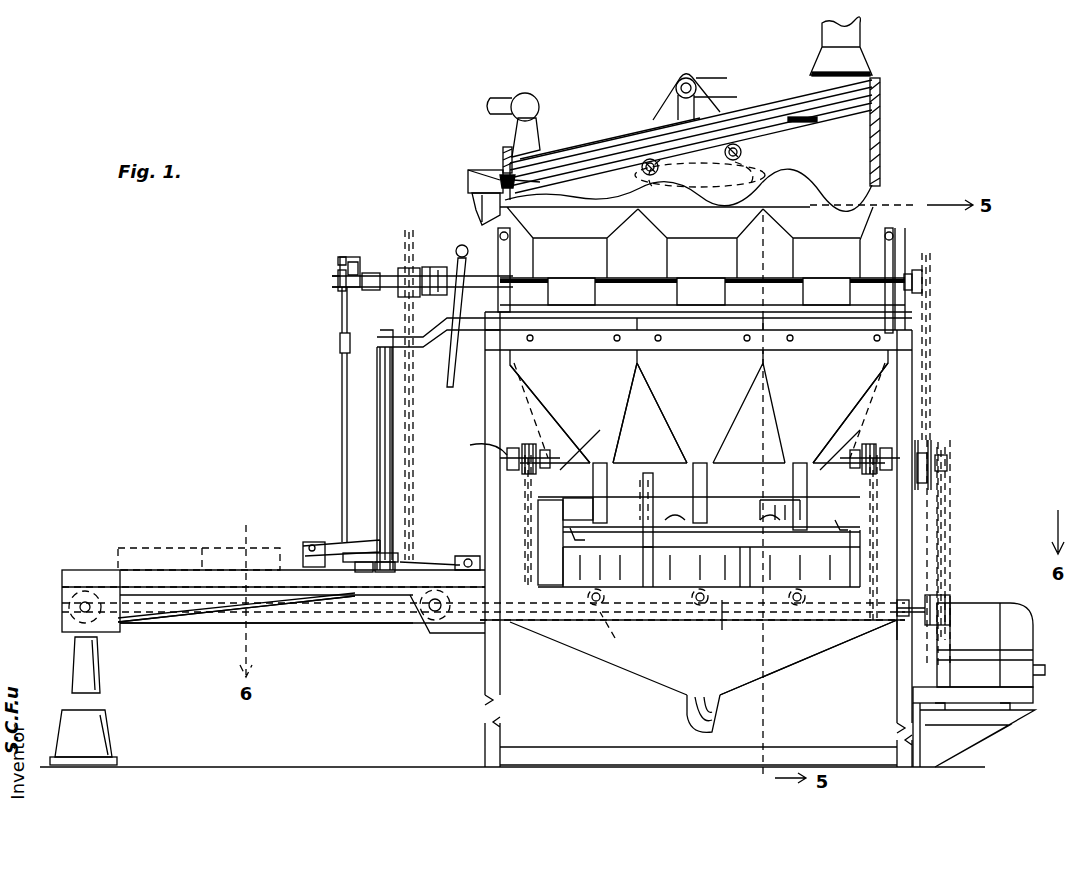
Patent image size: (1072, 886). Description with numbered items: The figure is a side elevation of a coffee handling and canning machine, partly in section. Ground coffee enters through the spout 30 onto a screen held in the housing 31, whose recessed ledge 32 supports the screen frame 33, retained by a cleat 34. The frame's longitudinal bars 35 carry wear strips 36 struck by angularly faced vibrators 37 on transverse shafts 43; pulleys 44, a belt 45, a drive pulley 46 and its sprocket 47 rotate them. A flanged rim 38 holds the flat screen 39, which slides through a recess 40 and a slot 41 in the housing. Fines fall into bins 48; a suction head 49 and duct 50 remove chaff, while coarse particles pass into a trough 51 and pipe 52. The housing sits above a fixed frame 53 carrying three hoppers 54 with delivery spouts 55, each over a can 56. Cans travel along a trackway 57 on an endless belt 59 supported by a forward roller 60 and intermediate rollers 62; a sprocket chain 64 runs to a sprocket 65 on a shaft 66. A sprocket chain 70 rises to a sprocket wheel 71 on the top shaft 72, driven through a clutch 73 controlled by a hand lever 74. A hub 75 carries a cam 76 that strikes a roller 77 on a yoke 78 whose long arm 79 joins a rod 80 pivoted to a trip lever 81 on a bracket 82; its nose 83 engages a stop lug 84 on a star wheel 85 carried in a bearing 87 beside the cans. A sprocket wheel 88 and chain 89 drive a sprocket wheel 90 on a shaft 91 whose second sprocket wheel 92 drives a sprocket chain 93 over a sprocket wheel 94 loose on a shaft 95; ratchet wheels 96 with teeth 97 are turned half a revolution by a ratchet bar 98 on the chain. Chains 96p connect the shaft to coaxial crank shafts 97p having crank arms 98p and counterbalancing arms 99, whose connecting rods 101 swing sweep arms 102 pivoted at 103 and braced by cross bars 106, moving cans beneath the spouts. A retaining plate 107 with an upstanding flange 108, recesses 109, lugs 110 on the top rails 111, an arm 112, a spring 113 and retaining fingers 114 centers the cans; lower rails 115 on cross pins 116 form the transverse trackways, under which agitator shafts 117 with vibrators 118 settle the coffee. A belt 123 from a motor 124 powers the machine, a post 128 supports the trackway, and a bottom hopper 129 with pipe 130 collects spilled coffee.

The spout 30 is at (850, 40).
The housing 31 is at (881, 143).
The ledge or shoulder 32 is at (878, 108).
The screen frame 33 is at (840, 120).
The cleat 34 is at (872, 88).
The longitudinal bars 35 is at (803, 123).
The wear strips 36 is at (700, 168).
The vibrators 37 is at (742, 154).
The flanged rim 38 is at (757, 117).
The screen 39 is at (688, 182).
The recess or cut away portion 40 is at (534, 182).
The slot 41 is at (504, 162).
The transverse shafts 43 is at (662, 184).
The pulleys 44 is at (760, 172).
The belt 45 is at (666, 100).
The drive pulley 46 is at (687, 78).
The sprocket 47 is at (704, 80).
The bins 48 is at (815, 230).
The suction head 49 is at (533, 127).
The duct 50 is at (505, 98).
The trough 51 is at (475, 182).
The pipe or duct 52 is at (480, 212).
The frame 53 is at (898, 745).
The hoppers 54 is at (838, 380).
The delivery spouts 55 is at (803, 468).
The can 56 is at (825, 605).
The trackway 57 is at (215, 600).
The endless belt or conveyor 59 is at (310, 620).
The forward roller 60 is at (95, 615).
The rods or rollers 62 is at (430, 625).
The sprocket chain 64 is at (170, 615).
The sprocket 65 is at (468, 555).
The shaft 66 is at (450, 600).
The sprocket chain 70 is at (413, 418).
The sprocket wheel 71 is at (407, 240).
The shaft 72 is at (783, 283).
The clutch 73 is at (436, 267).
The hand lever 74 is at (450, 365).
The hub 75 is at (335, 283).
The cam 76 is at (356, 262).
The roller 77 is at (350, 258).
The yoke 78 is at (338, 258).
The long arm 79 is at (342, 320).
The rod 80 is at (340, 393).
The trip lever 81 is at (322, 545).
The bracket 82 is at (300, 550).
The nose 83 is at (375, 540).
The stop lug 84 is at (395, 548).
The star wheel 85 is at (360, 572).
The support or bearing 87 is at (383, 572).
The sprocket wheel 88 is at (924, 276).
The chain 89 is at (930, 322).
The sprocket wheel 90 is at (928, 450).
The shaft 91 is at (920, 484).
The second sprocket wheel 92 is at (947, 463).
The sprocket chain 93 is at (946, 492).
The sprocket wheel 94 is at (940, 560).
The shaft 95 is at (905, 620).
The ratchet wheels 96 is at (918, 650).
The chains 96p is at (900, 512).
The ratchet teeth 97 is at (948, 565).
The crank shafts 97p is at (880, 442).
The ratchet bar 98 is at (540, 450).
The crank arm 98p is at (855, 470).
The counter-balancing crank arm 99 is at (884, 446).
The connecting rod 101 is at (823, 468).
The arms 102 is at (850, 420).
The pivot 103 is at (900, 236).
The cross bars 106 is at (652, 458).
The plate 107 is at (550, 528).
The upstanding flange 108 is at (585, 508).
The recesses 109 is at (800, 556).
The lugs 110 is at (762, 500).
The top rail 111 is at (688, 552).
The arm 112 is at (653, 482).
The spring 113 is at (629, 497).
The retaining fingers 114 is at (845, 522).
The lower rails 115 is at (845, 625).
The cross pins 116 is at (723, 628).
The agitator shaft 117 is at (596, 605).
The angularly faced vibrator 118 is at (620, 633).
The belt 123 is at (890, 640).
The motor 124 is at (985, 610).
The pillar or post 128 is at (105, 690).
The hopper 129 is at (740, 675).
The pipe 130 is at (690, 722).